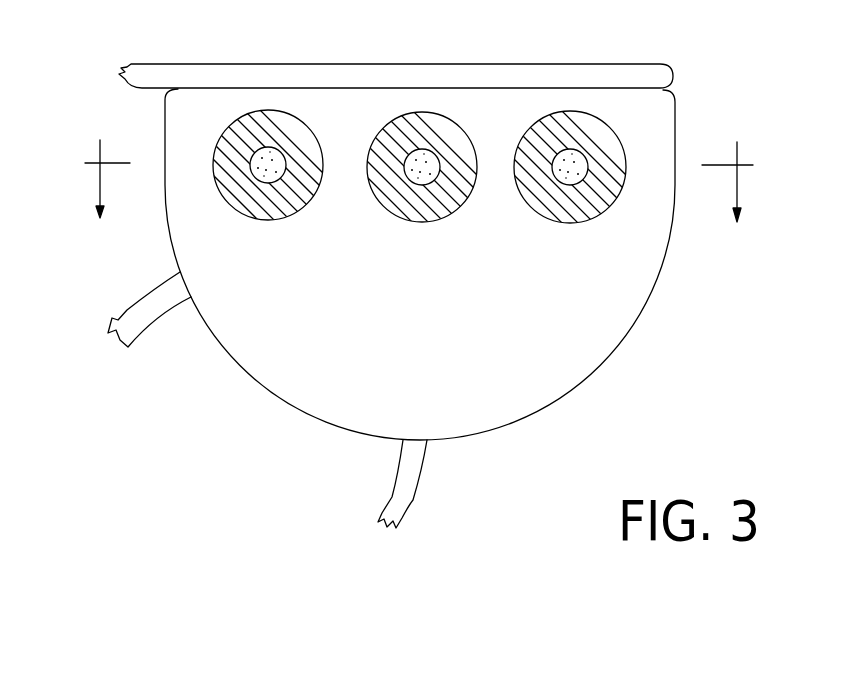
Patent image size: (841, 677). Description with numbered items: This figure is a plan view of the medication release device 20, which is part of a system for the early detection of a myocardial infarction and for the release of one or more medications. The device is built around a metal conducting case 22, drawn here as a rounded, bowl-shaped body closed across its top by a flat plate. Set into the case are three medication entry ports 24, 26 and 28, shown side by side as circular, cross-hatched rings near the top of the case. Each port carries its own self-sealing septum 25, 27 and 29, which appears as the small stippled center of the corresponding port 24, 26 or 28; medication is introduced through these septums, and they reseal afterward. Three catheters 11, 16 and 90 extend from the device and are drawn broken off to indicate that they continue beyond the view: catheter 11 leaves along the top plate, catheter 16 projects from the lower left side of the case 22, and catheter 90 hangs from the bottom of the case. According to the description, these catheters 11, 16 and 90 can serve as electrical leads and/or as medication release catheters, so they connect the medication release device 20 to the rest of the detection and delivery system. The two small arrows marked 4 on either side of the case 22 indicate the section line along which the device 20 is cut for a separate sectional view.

The section line 4- 4 is at (414, 188).
The catheter 11 is at (157, 65).
The catheter 16 is at (128, 310).
The medication release device 20 is at (356, 273).
The metal conducting case 22 is at (570, 333).
The medication entry port 24 is at (274, 128).
The self-sealing septum 25 is at (263, 147).
The medication entry port 26 is at (428, 128).
The self-sealing septum 27 is at (422, 149).
The medication entry port 28 is at (576, 126).
The self-sealing septum 29 is at (570, 149).
The catheter 90 is at (413, 502).